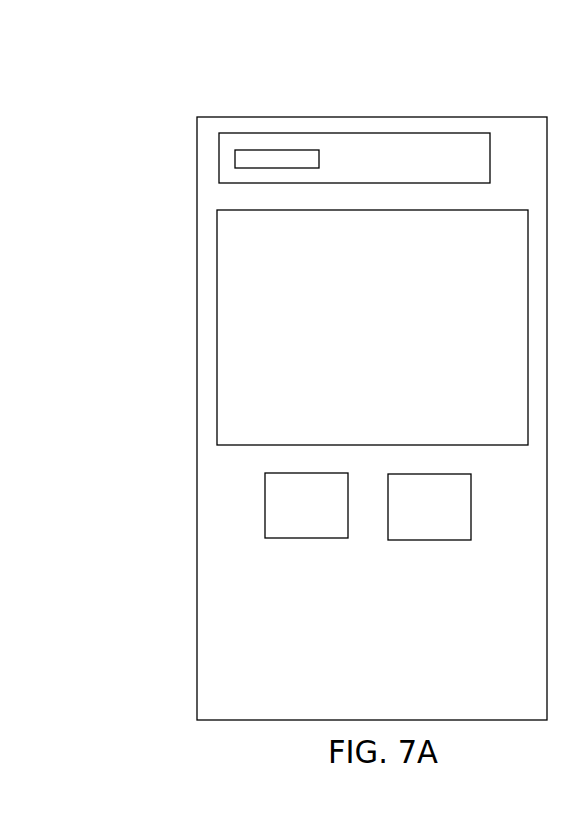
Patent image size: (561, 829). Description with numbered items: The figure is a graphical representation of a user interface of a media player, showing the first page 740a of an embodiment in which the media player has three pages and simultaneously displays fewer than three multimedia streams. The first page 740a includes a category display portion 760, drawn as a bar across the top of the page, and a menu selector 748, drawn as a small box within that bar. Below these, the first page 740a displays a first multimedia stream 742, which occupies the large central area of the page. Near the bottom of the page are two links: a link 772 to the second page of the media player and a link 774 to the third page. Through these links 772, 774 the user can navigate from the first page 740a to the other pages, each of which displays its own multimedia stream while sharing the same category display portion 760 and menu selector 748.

The first page 740a is at (462, 109).
The category display portion 760 is at (266, 124).
The menu selector 748 is at (223, 156).
The first multimedia stream 742 is at (208, 302).
The link to second page 772 is at (307, 547).
The link to third page 774 is at (436, 549).